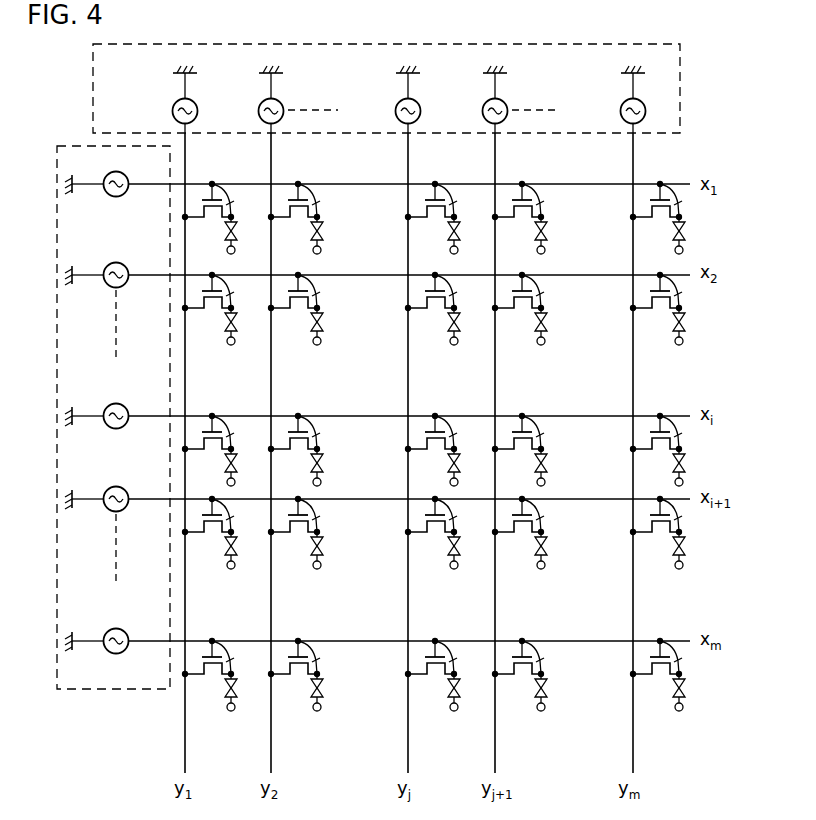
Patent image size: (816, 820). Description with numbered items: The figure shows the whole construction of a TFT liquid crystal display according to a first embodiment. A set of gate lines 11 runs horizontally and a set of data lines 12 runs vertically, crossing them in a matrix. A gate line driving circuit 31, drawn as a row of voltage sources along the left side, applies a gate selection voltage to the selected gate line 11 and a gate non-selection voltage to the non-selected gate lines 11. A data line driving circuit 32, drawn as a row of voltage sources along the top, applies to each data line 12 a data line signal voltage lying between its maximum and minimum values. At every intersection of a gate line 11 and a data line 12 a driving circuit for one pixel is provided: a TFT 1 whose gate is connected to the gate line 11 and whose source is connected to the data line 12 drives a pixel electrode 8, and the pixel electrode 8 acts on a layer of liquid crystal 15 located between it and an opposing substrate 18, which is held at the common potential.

The TFT 1 is at (210, 657).
The pixel electrode 8 is at (239, 659).
The gate line 11 is at (233, 624).
The data line 12 is at (186, 588).
The layer of liquid crystal 15 is at (219, 711).
The opposing substrate 18 is at (239, 730).
The gate line driving circuit 31 is at (97, 690).
The data line driving circuit 32 is at (682, 80).